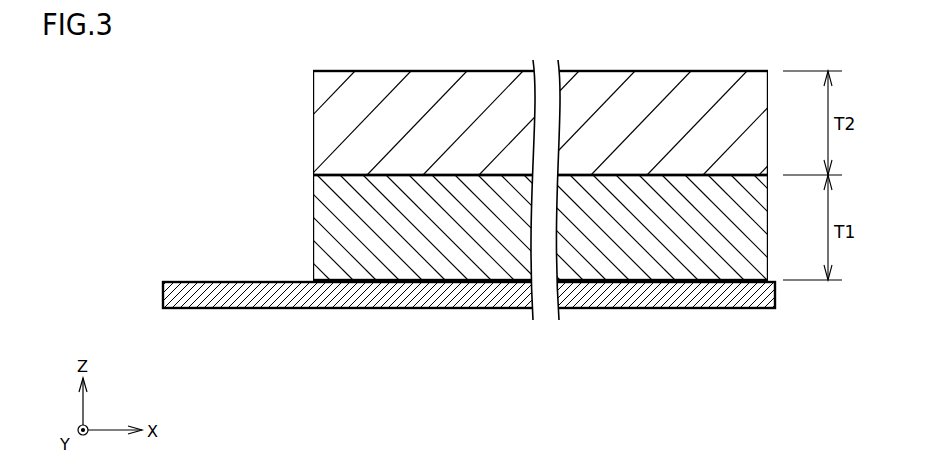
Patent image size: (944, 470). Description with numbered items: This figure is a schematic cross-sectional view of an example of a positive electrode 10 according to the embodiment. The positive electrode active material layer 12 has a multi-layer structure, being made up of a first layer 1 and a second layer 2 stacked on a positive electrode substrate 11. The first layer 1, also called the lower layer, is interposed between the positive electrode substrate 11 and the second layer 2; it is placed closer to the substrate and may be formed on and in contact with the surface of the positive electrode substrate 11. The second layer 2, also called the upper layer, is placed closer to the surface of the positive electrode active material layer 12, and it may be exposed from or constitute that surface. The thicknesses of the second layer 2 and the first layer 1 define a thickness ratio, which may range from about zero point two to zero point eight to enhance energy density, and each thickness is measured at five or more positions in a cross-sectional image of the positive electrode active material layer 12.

The laminate structure 10 is at (461, 190).
The positive electrode active material layer 12 is at (487, 175).
The second layer 2 is at (313, 128).
The first layer 1 is at (313, 223).
The positive electrode substrate 11 is at (446, 295).